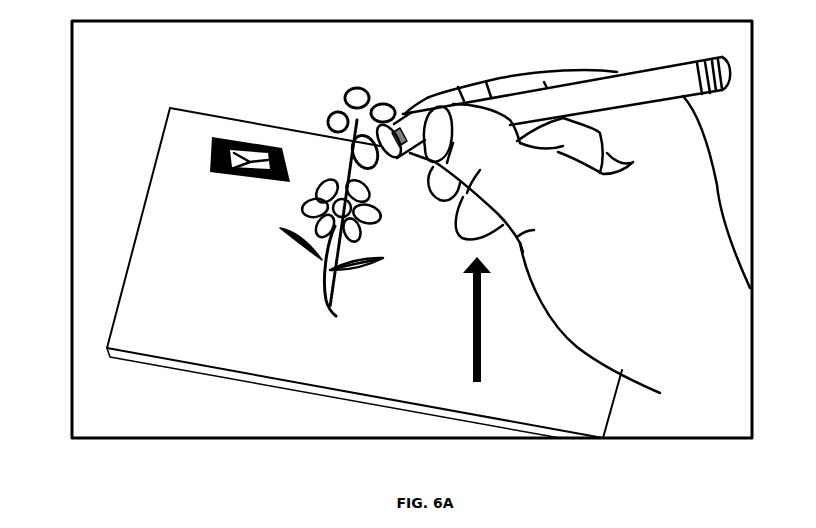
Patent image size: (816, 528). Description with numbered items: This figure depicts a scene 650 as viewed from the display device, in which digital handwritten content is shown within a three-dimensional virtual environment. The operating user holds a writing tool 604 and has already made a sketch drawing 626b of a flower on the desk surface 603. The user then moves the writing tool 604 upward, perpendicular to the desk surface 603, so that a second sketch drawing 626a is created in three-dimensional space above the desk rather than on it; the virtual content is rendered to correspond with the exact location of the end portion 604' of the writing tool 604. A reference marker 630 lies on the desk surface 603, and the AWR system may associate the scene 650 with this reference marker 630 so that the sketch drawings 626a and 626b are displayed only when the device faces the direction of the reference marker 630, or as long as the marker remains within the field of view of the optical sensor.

The scene 650 is at (90, 60).
The desk surface 603 is at (167, 203).
The reference marker 630 is at (230, 176).
The sketch drawing 626a is at (330, 88).
The sketch drawing 626b is at (308, 261).
The writing tool 604 is at (566, 78).
The end portion of the writing tool 604' is at (414, 97).